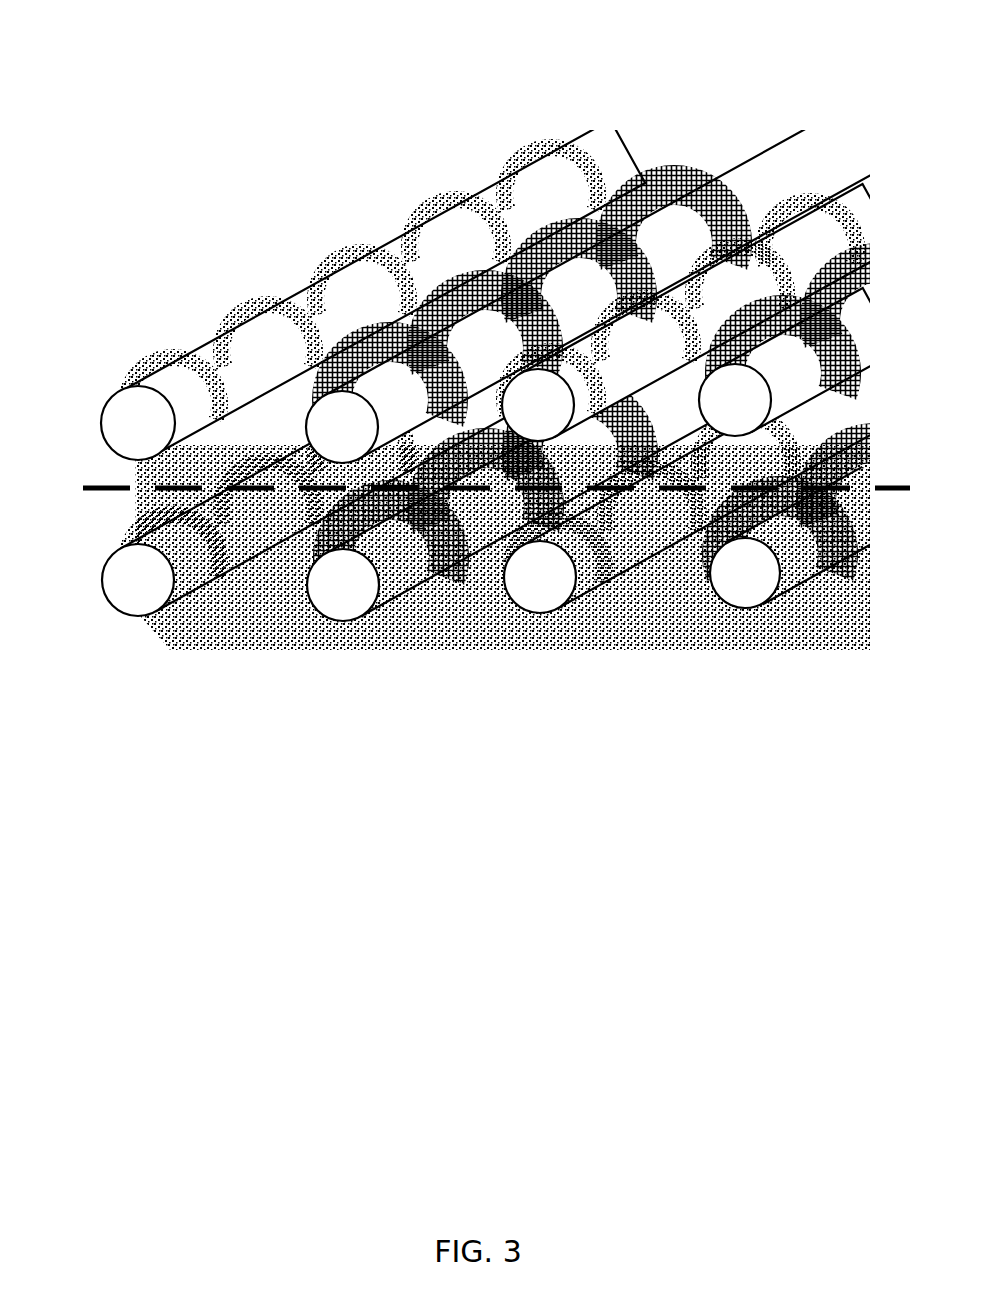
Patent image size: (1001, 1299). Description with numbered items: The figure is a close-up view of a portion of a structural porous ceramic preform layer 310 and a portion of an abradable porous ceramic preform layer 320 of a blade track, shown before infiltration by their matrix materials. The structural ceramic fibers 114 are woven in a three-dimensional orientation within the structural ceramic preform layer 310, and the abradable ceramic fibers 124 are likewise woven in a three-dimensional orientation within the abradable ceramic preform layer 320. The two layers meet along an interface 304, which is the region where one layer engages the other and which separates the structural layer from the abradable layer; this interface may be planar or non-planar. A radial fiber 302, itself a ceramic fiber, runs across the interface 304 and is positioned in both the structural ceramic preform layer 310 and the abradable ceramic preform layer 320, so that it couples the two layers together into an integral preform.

The radial fiber 302 is at (775, 240).
The structural ceramic fibers 114 is at (730, 405).
The abradable ceramic fibers 124 is at (728, 585).
The structural porous ceramic preform layer 310 is at (497, 238).
The abradable porous ceramic preform layer 320 is at (492, 444).
The interface 304 is at (82, 497).